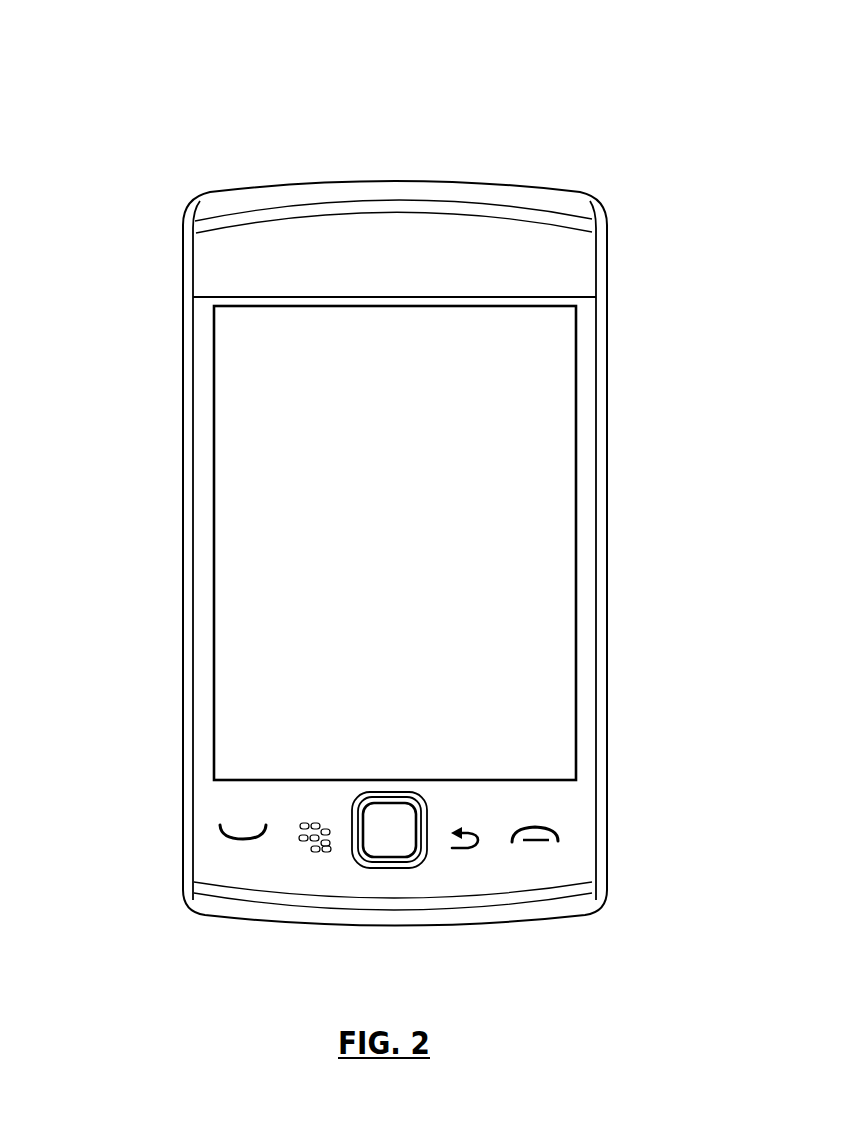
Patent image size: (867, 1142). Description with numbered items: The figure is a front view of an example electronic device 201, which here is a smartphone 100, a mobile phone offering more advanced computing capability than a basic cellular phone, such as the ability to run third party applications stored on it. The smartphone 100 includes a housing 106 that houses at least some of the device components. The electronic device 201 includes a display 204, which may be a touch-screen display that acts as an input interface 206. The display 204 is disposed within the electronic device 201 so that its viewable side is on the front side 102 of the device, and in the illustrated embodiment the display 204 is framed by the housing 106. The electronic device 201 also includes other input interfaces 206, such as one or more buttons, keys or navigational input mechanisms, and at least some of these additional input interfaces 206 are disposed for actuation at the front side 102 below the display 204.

The smartphone 100 is at (403, 491).
The electronic device 201 is at (258, 150).
The housing 106 is at (605, 360).
The display 204 is at (215, 458).
The input interface 206 is at (215, 583).
The front side 102 is at (207, 795).